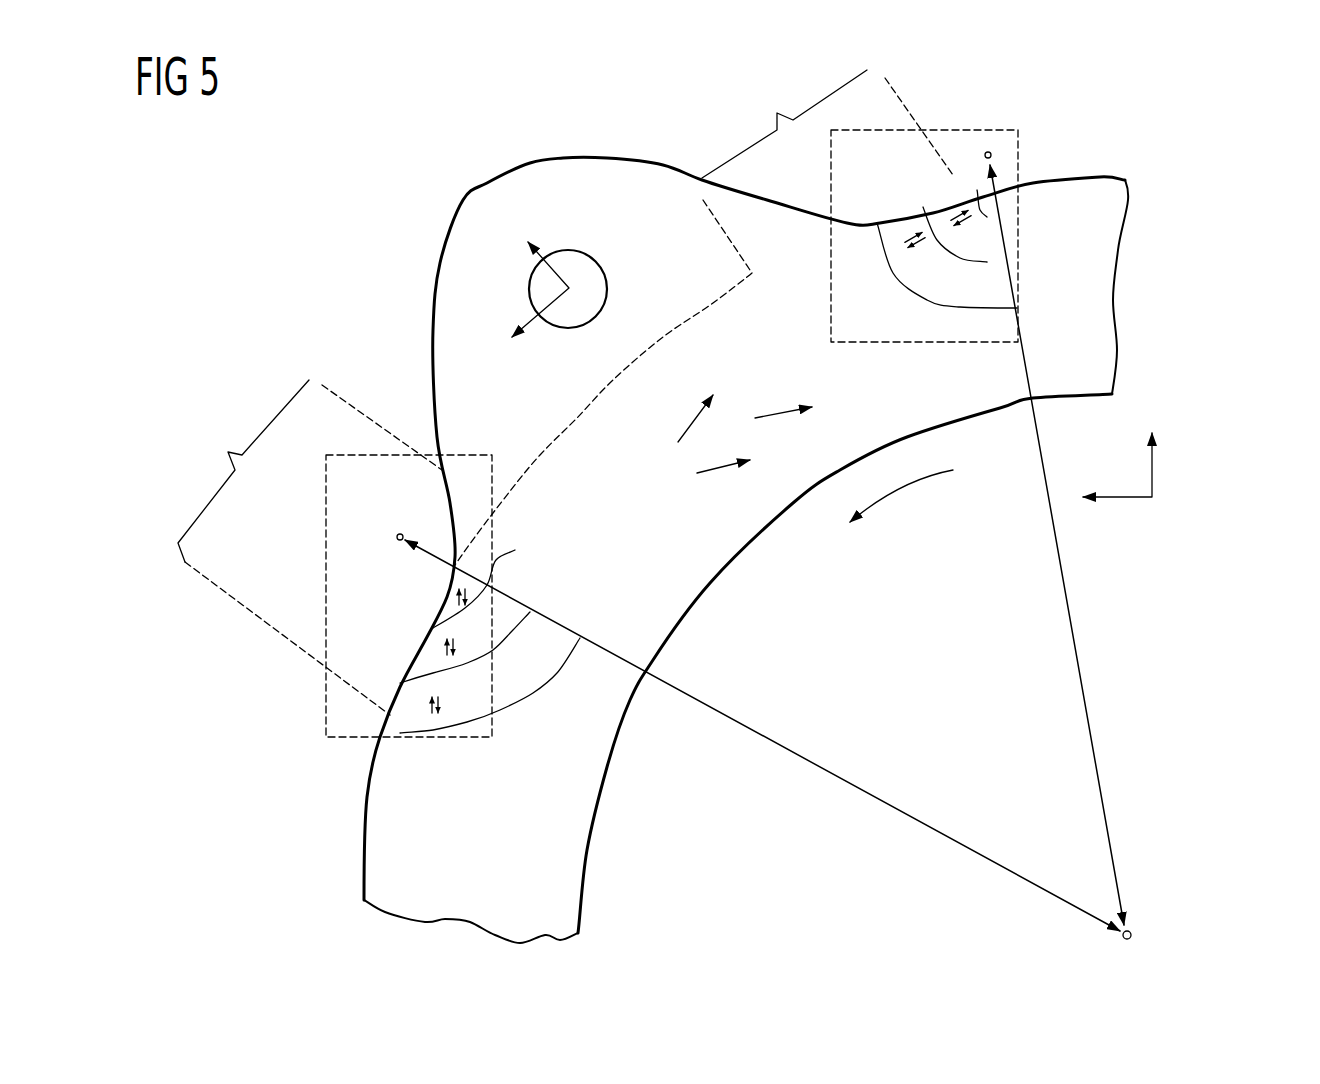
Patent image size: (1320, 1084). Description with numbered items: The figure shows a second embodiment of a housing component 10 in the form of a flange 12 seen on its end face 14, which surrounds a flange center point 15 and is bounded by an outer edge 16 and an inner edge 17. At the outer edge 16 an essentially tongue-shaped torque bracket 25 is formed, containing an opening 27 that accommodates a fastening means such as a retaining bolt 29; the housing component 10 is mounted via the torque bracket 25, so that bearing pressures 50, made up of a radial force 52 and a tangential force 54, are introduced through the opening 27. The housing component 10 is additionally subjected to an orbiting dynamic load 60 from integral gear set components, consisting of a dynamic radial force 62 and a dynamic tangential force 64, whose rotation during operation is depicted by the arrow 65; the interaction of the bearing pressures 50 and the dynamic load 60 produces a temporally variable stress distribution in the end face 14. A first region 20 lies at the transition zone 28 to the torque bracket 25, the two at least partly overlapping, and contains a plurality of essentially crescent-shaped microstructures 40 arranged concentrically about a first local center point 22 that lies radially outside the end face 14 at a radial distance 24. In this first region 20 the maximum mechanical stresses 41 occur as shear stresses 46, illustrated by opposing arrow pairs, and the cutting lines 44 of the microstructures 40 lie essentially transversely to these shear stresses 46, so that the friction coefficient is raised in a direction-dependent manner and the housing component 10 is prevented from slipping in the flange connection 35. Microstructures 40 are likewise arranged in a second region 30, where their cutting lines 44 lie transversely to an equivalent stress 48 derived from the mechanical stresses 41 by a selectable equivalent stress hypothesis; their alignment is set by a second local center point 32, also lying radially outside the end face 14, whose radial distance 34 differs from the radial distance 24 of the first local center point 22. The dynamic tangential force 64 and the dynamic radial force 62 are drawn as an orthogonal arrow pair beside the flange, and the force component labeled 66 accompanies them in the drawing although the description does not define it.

The housing component 10 is at (785, 520).
The flange 12 is at (845, 663).
The end face 14 is at (692, 585).
The flange center point 15 is at (788, 534).
The outer edge 16 is at (1105, 177).
The inner edge 17 is at (983, 413).
The first region 20 is at (323, 560).
The first local center point 22 is at (400, 534).
The radial distance of the first local center point 24 is at (749, 700).
The torque bracket 25 is at (485, 188).
The opening 27 is at (487, 259).
The transition zone 28 is at (565, 392).
The retaining bolt 29 is at (487, 259).
The second region 30 is at (1018, 257).
The second local center point 32 is at (988, 155).
The radial distance of the second local center point 34 is at (1076, 527).
The flange connection 35 is at (565, 262).
The microstructures 40 is at (733, 461).
The mechanical stresses 41 is at (773, 415).
The cutting lines 44 is at (987, 213).
The shear stresses 46 is at (423, 768).
The equivalent stress 48 is at (903, 233).
The bearing pressures 50 is at (487, 259).
The radial force 52 is at (487, 259).
The tangential force 54 is at (487, 259).
The dynamic load 60 is at (1177, 500).
The dynamic radial force 62 is at (1177, 500).
The dynamic tangential force 64 is at (1152, 460).
The arrow 65 is at (907, 490).
The axis 66 is at (1177, 500).